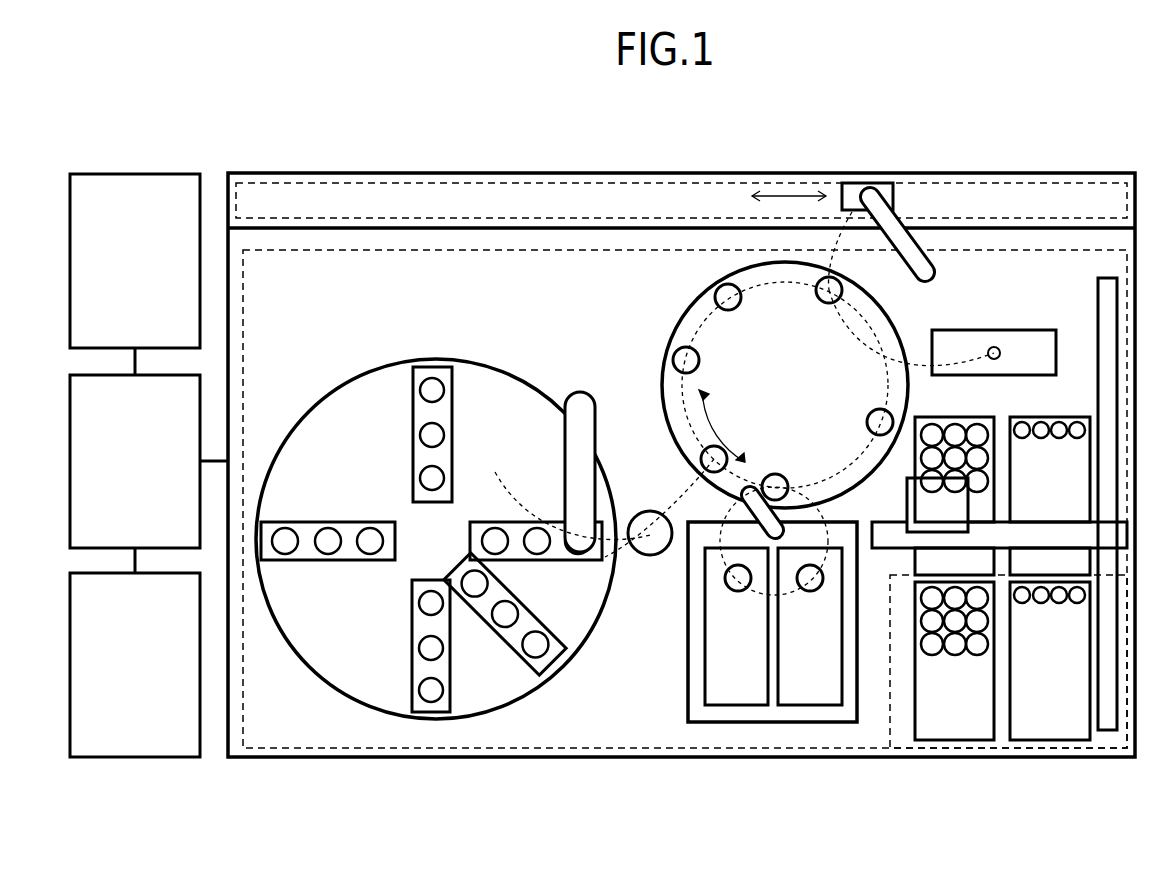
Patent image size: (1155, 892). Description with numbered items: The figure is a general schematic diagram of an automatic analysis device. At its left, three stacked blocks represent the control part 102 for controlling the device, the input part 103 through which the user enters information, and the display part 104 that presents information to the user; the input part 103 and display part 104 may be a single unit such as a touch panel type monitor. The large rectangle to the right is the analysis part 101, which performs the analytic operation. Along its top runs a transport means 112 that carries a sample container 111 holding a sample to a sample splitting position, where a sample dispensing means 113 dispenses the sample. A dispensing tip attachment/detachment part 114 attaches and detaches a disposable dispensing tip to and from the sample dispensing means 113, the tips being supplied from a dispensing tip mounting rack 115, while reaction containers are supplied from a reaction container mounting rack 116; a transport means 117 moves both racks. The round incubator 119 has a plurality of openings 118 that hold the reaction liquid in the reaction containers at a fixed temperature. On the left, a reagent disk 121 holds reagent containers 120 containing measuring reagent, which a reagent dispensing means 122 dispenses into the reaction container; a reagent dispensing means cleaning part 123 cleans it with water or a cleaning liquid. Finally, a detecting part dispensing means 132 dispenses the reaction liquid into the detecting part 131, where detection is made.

The analysis part 101 is at (247, 778).
The control part 102 is at (162, 477).
The input part 103 is at (162, 682).
The display part 104 is at (162, 275).
The sample container 111 is at (842, 200).
The transport means 112 is at (257, 190).
The sample dispensing means 113 is at (905, 210).
The dispensing tip attachment/detachment part 114 is at (963, 348).
The dispensing tip mounting rack 115 is at (1040, 720).
The reaction container mounting rack 116 is at (953, 720).
The transport means 117 is at (857, 662).
The openings 118 is at (685, 358).
The incubator 119 is at (808, 392).
The reagent container 120 is at (427, 390).
The reagent disk 121 is at (323, 648).
The reagent dispensing means 122 is at (580, 395).
The reagent dispensing means cleaning part 123 is at (587, 645).
The detecting part 131 is at (768, 708).
The detecting part dispensing means 132 is at (740, 582).